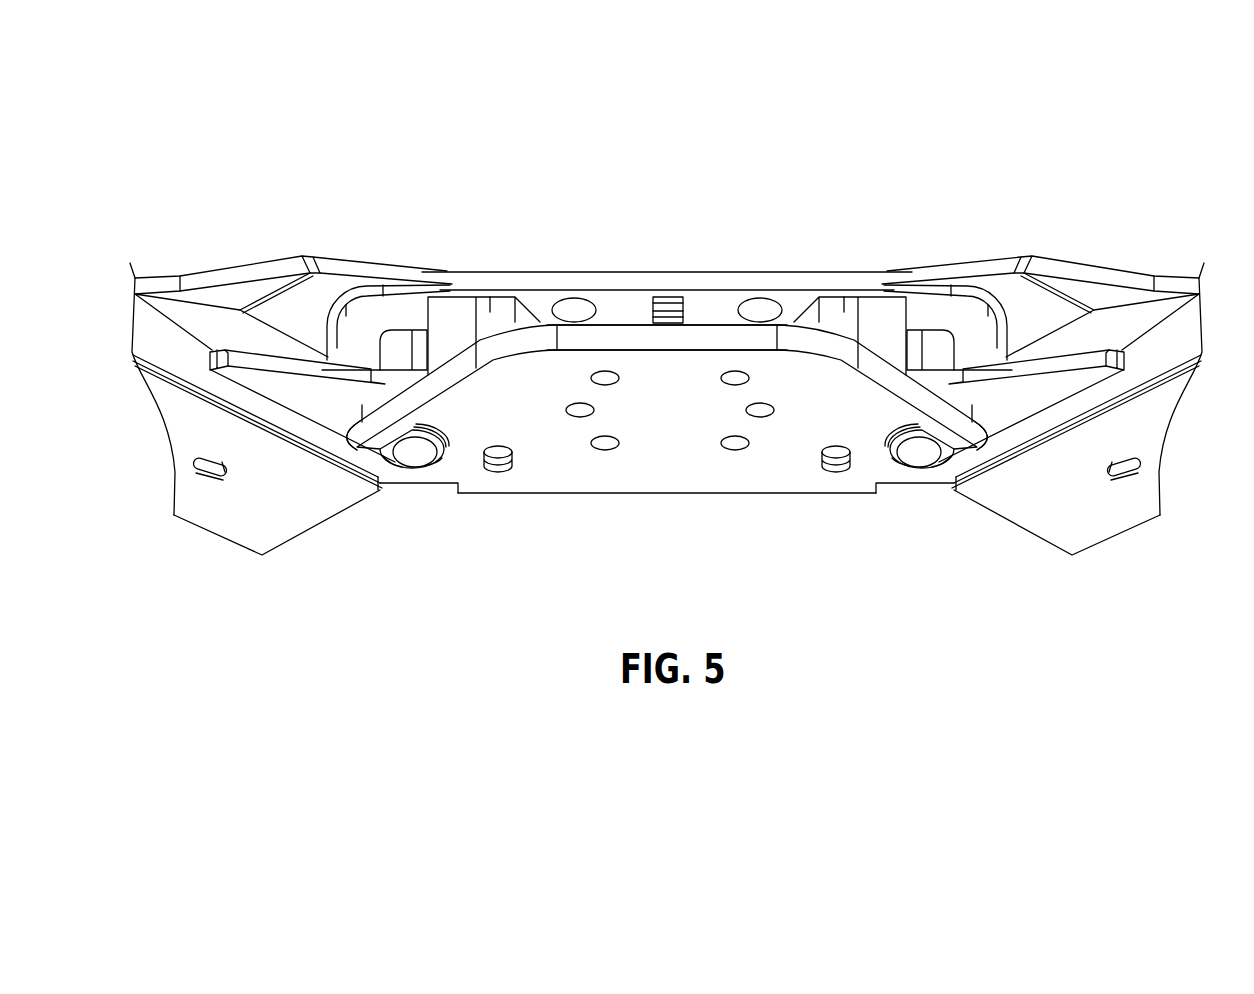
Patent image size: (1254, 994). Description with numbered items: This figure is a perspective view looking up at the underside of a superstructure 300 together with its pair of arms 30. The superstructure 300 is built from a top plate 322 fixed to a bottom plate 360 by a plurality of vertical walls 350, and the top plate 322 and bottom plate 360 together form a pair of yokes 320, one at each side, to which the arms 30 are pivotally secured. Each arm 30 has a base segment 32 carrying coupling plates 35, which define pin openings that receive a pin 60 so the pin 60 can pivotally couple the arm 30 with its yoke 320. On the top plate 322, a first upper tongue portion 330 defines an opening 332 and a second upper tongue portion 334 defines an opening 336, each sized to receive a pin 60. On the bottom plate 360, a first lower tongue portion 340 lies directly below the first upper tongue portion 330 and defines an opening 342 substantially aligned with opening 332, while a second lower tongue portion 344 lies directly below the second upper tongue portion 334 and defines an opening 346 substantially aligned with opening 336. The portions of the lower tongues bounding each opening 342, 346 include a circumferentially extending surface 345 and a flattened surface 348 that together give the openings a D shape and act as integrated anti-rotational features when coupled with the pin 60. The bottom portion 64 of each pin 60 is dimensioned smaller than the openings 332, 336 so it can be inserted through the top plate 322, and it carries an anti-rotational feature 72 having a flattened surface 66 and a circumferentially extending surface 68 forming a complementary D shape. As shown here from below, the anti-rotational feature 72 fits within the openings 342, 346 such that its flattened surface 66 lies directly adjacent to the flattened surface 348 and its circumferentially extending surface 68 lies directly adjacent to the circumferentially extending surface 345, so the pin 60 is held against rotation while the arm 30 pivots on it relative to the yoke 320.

The superstructure 300 is at (667, 326).
The arm 30 is at (210, 547).
The base segment 32 is at (301, 523).
The coupling plate 35 is at (254, 362).
The yoke 320 is at (437, 213).
The top plate 322 is at (577, 271).
The first upper tongue portion 330 is at (995, 312).
The opening 332 is at (957, 328).
The second upper tongue portion 334 is at (340, 312).
The opening 336 is at (380, 328).
The first lower tongue portion 340 is at (975, 457).
The opening 342 is at (885, 455).
The second lower tongue portion 344 is at (360, 457).
The circumferentially extending surface 345 is at (423, 430).
The opening 346 is at (449, 455).
The flattened surface 348 is at (337, 457).
The vertical wall 350 is at (463, 302).
The bottom plate 360 is at (658, 450).
The pin 60 is at (449, 445).
The bottom portion 64 is at (413, 453).
The flattened surface 66 is at (402, 468).
The circumferentially extending surface 68 is at (443, 464).
The anti-rotational feature 72 is at (391, 425).